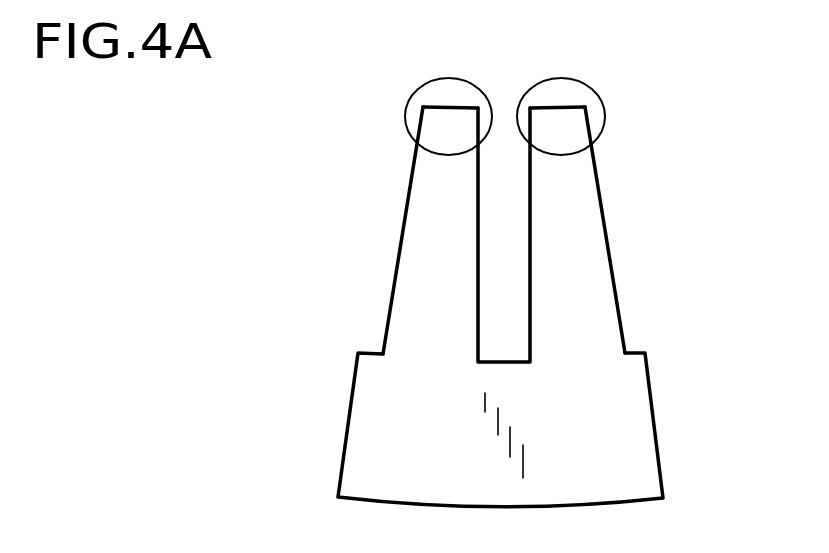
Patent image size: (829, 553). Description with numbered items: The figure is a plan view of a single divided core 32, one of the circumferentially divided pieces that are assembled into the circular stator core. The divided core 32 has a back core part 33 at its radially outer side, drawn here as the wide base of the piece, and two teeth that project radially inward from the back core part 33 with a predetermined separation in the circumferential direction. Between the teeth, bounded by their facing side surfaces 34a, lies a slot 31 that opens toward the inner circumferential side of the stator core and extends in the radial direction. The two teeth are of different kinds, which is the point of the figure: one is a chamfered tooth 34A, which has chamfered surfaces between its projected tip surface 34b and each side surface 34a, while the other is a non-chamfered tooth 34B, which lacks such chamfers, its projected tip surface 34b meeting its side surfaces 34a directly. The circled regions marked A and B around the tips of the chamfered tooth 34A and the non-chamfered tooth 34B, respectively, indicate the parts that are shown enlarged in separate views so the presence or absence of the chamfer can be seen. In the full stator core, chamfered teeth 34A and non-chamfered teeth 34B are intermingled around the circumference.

The slot 31 is at (498, 163).
The divided core 32 is at (635, 162).
The back core part 33 is at (618, 432).
The chamfered tooth 34A is at (583, 280).
The non-chamfered tooth 34B is at (427, 285).
The side surface 34a is at (478, 220).
The projected tip surface 34b is at (453, 107).
The enlarged part A is at (587, 83).
The enlarged part B is at (420, 87).